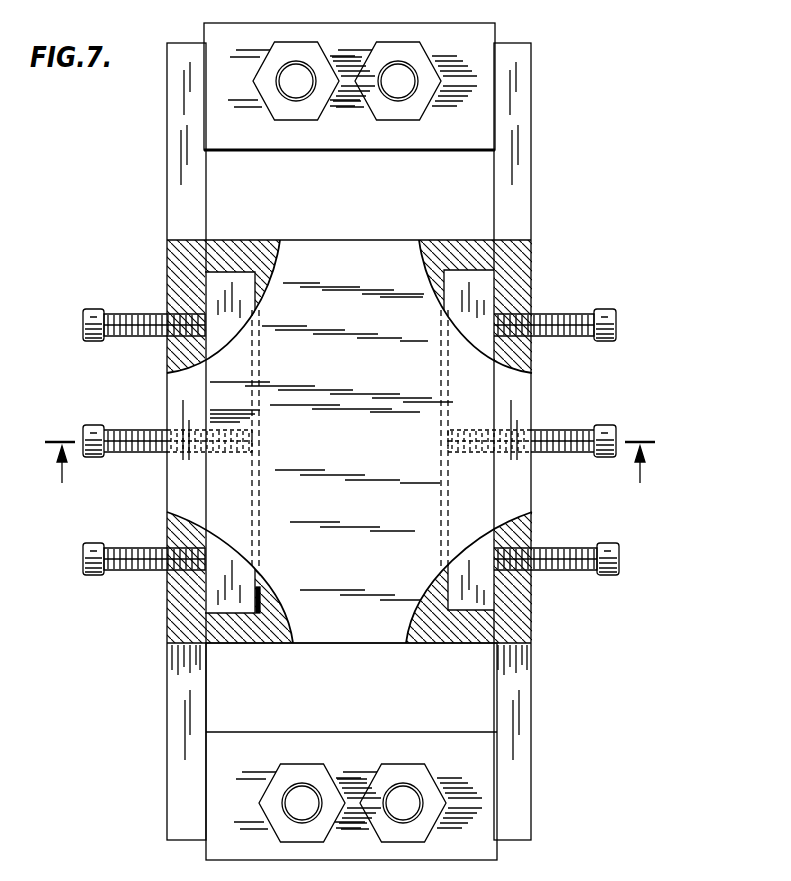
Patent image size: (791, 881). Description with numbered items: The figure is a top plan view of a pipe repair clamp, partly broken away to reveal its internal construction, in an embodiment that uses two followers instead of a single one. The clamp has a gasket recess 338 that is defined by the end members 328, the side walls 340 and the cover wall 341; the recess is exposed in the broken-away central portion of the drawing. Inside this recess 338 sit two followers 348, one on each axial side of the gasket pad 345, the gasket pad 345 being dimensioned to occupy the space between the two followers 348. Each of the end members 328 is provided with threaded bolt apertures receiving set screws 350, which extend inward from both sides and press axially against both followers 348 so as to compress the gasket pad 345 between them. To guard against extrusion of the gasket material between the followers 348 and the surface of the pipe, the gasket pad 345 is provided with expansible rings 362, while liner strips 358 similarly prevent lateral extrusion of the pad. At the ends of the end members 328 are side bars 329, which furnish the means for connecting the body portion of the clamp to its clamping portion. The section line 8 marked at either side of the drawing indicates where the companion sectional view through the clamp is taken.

The end members 328 is at (518, 255).
The side bars 329 is at (475, 66).
The gasket recess 338 is at (200, 280).
The side walls 340 is at (250, 248).
The cover wall 341 is at (368, 258).
The gasket pad 345 is at (428, 256).
The followers 348 is at (480, 296).
The set screws 350 is at (563, 430).
The liner strips 358 is at (242, 262).
The expansible rings 362 is at (272, 614).
The section line 8- 8 is at (348, 470).